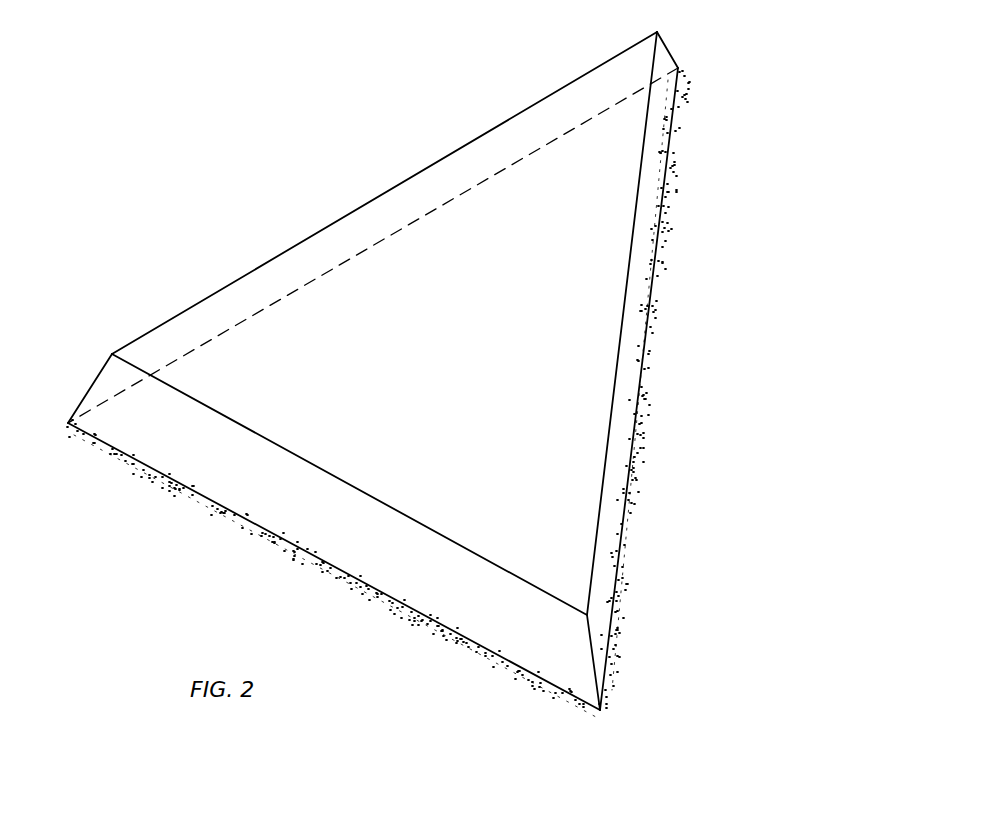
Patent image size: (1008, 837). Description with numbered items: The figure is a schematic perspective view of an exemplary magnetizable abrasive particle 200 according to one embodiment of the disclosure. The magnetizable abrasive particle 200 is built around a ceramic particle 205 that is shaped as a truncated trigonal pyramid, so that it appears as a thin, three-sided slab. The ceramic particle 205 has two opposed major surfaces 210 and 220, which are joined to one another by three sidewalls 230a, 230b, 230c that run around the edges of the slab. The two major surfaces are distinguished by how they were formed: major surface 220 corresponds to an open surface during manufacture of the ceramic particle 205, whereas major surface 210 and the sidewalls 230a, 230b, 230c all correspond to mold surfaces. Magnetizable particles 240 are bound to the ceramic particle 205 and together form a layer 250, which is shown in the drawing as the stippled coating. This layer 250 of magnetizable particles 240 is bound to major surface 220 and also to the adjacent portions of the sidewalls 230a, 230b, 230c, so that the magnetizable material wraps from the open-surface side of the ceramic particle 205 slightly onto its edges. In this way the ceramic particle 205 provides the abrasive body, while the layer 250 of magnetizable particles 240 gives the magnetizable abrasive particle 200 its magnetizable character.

The magnetizable abrasive particle 200 is at (226, 140).
The ceramic particle 205 is at (568, 76).
The major surface 210 is at (213, 292).
The major surface 220 is at (461, 637).
The sidewall 230a is at (647, 322).
The sidewall 230b is at (90, 380).
The sidewall 230c is at (141, 466).
The magnetizable particles 240 is at (533, 676).
The layer 250 is at (613, 692).